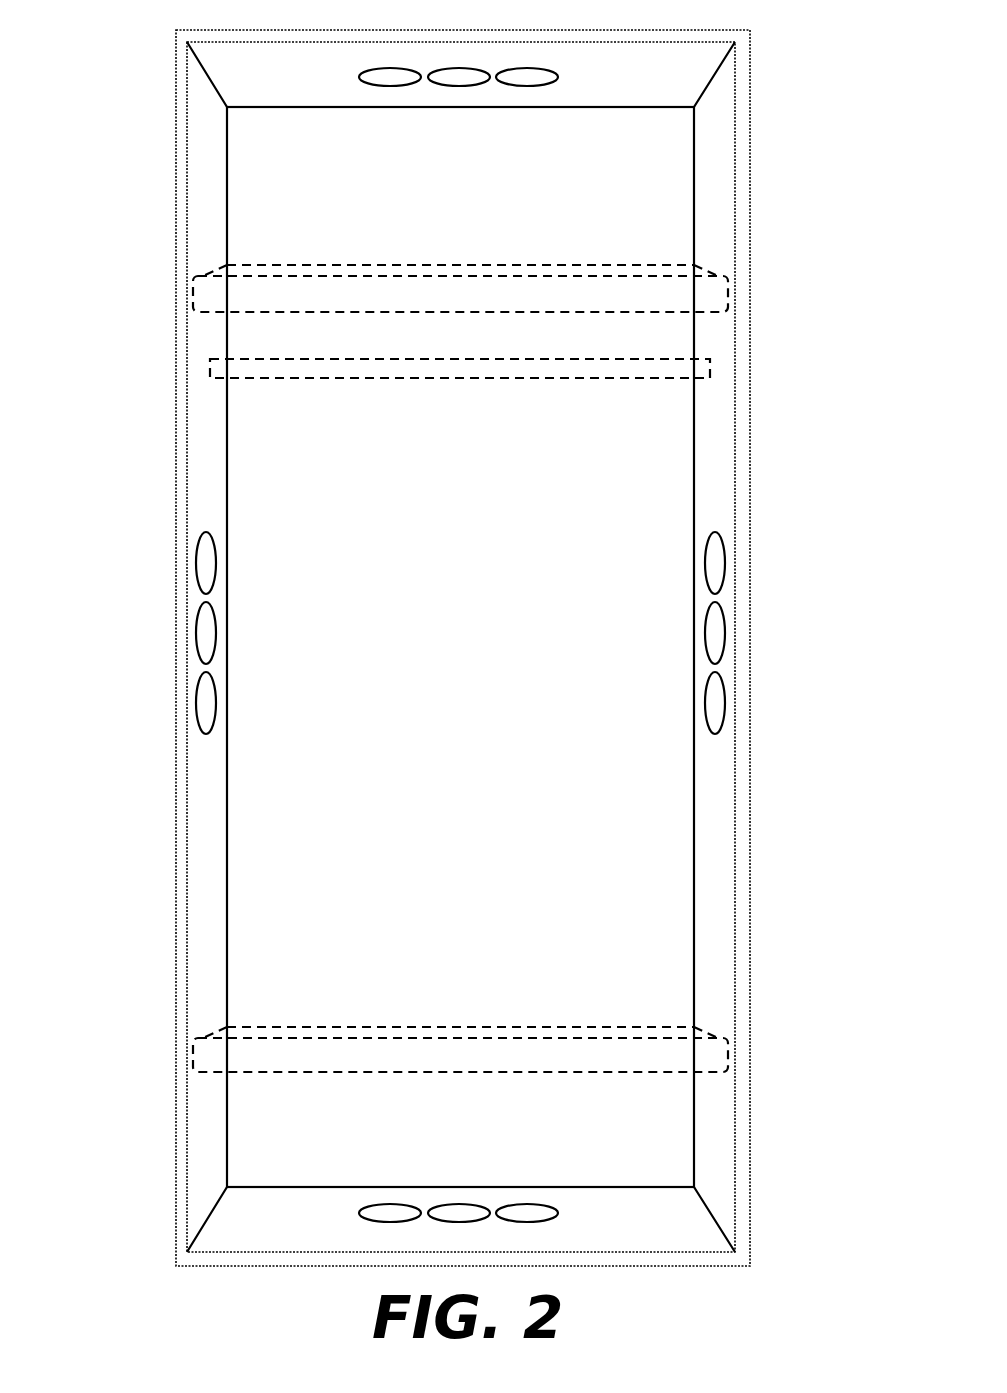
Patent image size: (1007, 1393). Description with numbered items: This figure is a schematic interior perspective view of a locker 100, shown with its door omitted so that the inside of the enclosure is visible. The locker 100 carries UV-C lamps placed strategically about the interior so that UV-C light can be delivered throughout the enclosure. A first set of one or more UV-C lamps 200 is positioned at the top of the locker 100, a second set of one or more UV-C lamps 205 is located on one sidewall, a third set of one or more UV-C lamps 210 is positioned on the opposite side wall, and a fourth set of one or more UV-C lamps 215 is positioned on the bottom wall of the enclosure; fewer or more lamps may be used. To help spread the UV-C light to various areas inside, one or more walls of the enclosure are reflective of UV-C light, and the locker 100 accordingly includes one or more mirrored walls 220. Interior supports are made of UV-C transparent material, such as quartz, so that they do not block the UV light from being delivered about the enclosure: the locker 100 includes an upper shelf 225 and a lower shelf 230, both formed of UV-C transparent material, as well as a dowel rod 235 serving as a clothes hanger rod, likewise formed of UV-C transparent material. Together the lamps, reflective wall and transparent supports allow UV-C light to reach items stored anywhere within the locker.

The locker 100 is at (128, 183).
The first set of UV-C lamps 200 is at (564, 72).
The second set of UV-C lamps 205 is at (725, 548).
The third set of UV-C lamps 210 is at (196, 548).
The fourth set of UV-C lamps 215 is at (362, 1221).
The mirrored wall 220 is at (230, 826).
The upper shelf 225 is at (667, 276).
The lower shelf 230 is at (667, 1038).
The dowel rod 235 is at (667, 359).